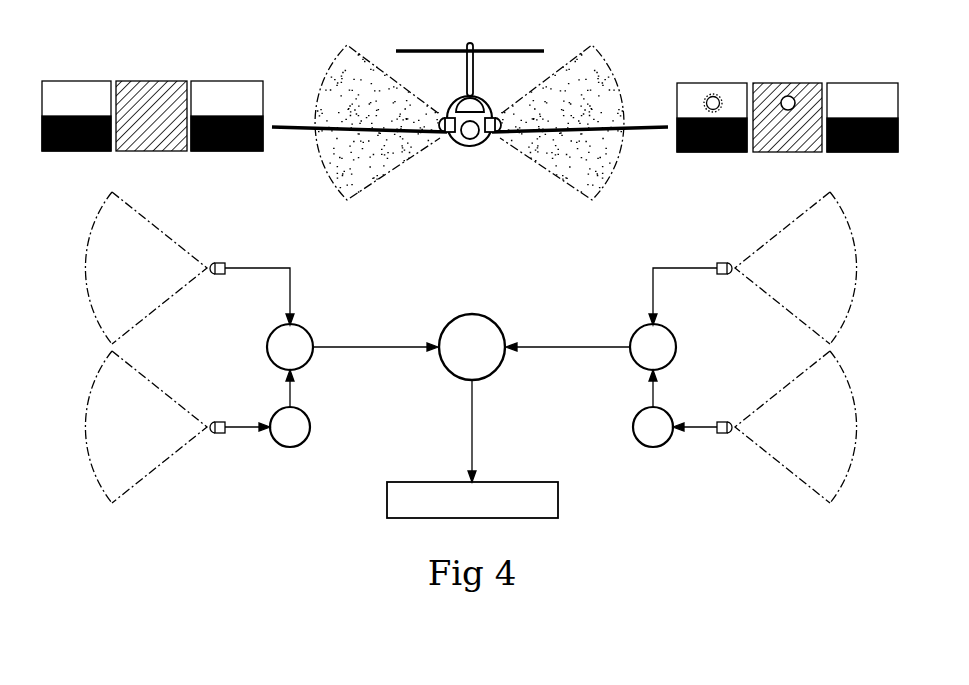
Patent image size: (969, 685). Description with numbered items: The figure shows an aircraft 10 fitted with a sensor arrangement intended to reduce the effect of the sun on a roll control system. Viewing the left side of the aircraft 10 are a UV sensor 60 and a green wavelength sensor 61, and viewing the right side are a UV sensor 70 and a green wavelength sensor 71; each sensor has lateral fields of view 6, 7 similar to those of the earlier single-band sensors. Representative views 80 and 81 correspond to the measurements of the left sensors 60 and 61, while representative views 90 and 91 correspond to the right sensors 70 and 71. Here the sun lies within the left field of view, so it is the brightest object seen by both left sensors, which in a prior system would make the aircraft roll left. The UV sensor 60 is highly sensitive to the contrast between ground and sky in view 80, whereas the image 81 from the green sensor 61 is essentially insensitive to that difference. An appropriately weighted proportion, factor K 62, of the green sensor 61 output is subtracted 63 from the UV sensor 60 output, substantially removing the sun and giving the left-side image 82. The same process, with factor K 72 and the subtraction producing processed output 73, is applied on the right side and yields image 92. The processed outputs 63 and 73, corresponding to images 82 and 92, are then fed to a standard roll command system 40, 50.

The lateral field of view 6 is at (343, 92).
The lateral field of view 7 is at (598, 92).
The aircraft 10 is at (475, 63).
The roll command system 40 is at (475, 316).
The roll command system 50 is at (513, 481).
The UV sensor 60 is at (720, 262).
The green wavelength sensor 61 is at (724, 436).
The factor K 62 is at (636, 441).
The subtraction 63 is at (632, 333).
The UV sensor 70 is at (218, 262).
The green wavelength sensor 71 is at (218, 436).
The factor K 72 is at (307, 441).
The processed output 73 is at (312, 333).
The representative view 80 is at (707, 83).
The image 81 is at (783, 83).
The image 82 is at (857, 83).
The representative view 90 is at (224, 81).
The representative view 91 is at (148, 81).
The image 92 is at (73, 81).